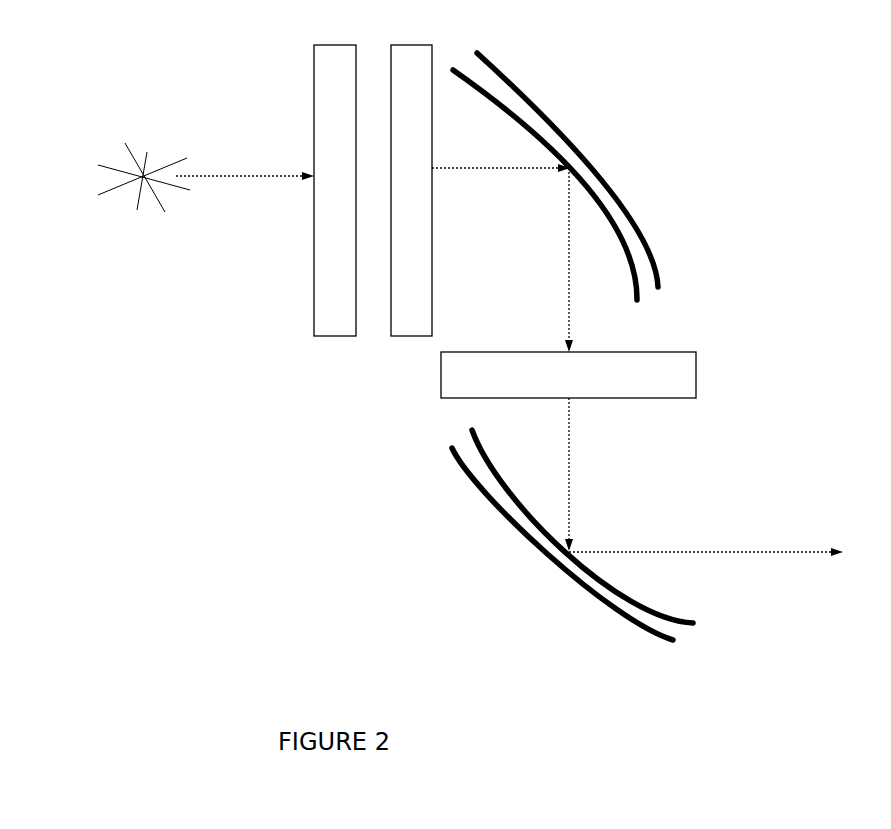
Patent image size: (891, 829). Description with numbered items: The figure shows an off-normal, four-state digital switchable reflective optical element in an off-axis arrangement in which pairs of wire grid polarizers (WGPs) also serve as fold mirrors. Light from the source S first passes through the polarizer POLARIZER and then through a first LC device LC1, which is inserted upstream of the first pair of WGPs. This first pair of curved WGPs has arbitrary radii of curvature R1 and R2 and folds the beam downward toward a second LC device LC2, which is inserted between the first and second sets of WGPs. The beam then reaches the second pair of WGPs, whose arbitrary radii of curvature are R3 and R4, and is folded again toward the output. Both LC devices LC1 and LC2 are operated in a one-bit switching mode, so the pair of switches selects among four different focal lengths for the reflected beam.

The light source S is at (144, 177).
The polarizer POLARIZER is at (335, 190).
The first LC device LC1 is at (411, 190).
The second LC device LC2 is at (568, 375).
The first radius of curvature of the first WGP pair R1 is at (573, 170).
The second radius of curvature of the first WGP pair R2 is at (545, 185).
The first radius of curvature of the second WGP pair R3 is at (579, 526).
The second radius of curvature of the second WGP pair R4 is at (562, 544).